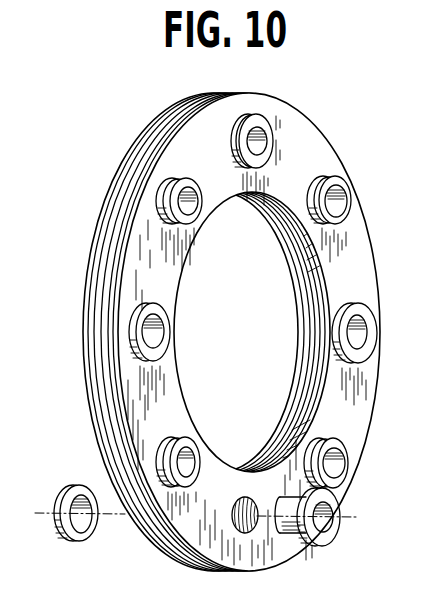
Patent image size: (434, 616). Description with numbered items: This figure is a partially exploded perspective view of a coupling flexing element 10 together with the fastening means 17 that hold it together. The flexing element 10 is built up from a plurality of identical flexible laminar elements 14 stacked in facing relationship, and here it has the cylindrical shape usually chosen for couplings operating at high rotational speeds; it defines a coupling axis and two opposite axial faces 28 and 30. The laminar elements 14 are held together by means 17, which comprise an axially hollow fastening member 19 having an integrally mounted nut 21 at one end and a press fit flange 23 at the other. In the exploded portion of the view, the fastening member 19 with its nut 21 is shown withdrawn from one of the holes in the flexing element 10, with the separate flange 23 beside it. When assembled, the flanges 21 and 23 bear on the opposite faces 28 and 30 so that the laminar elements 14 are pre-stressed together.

The coupling flexing element 10 is at (342, 147).
The flexible laminar element 14 is at (120, 176).
The means for holding laminar elements together 17 is at (328, 542).
The axially hollow fastening member 19 is at (295, 533).
The integrally mounted nut 21 is at (326, 545).
The press fit flange 23 is at (62, 540).
The axial face 28 is at (137, 135).
The axial face 30 is at (237, 107).